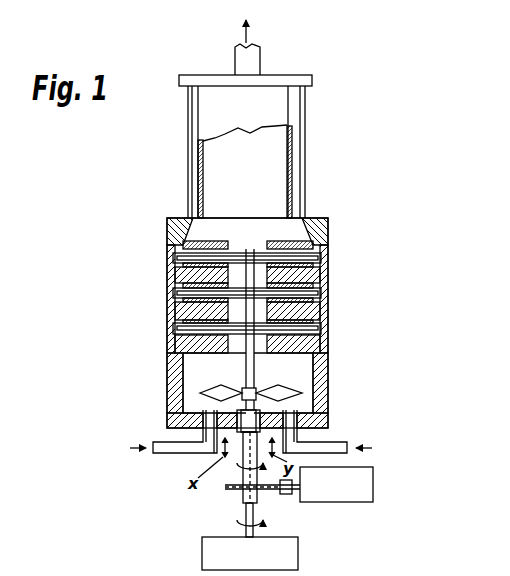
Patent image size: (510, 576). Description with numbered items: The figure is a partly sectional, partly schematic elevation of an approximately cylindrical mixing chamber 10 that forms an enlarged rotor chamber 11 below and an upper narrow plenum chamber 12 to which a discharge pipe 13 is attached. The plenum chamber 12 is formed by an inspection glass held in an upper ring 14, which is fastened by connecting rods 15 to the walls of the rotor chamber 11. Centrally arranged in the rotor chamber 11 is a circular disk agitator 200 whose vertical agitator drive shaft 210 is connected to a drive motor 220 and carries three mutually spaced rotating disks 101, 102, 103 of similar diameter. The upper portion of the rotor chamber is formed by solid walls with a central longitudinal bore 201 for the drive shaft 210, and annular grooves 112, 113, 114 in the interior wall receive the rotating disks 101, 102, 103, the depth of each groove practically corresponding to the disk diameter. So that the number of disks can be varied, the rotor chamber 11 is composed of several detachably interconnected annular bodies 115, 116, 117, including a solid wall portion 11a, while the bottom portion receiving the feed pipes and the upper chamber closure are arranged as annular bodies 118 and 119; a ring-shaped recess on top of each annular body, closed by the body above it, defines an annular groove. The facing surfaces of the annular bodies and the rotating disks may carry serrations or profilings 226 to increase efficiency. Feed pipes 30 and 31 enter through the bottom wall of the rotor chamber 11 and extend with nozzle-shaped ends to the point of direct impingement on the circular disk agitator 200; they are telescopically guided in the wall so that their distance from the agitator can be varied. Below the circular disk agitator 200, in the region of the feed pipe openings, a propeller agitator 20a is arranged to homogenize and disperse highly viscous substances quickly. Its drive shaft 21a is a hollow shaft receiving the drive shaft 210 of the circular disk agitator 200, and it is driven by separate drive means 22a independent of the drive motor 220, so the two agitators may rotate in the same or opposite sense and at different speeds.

The mixing chamber 10 is at (340, 223).
The rotor chamber 11 is at (329, 362).
The housing block 11a is at (329, 275).
The plenum chamber 12 is at (230, 112).
The discharge pipe 13 is at (252, 58).
The upper ring 14 is at (296, 80).
The support rods 15 is at (188, 170).
The propeller agitator 20a is at (302, 398).
The drive shaft of the propeller agitator 21a is at (243, 500).
The drive means for the propeller agitator 22a is at (375, 500).
The feed pipe 30 is at (187, 450).
The feed pipe 31 is at (337, 443).
The rotating disk 101 is at (176, 332).
The rotating disk 102 is at (176, 296).
The rotating disk 103 is at (176, 259).
The annular groove 112 is at (329, 326).
The annular groove 113 is at (329, 292).
The annular groove 114 is at (329, 258).
The annular body 115 is at (176, 345).
The annular body 116 is at (176, 318).
The annular body 117 is at (176, 279).
The annular body 118 is at (170, 418).
The annular body 119 is at (180, 227).
The circular disk agitator 200 is at (246, 373).
The central longitudinal bore 201 is at (257, 353).
The agitator drive shaft 210 is at (245, 532).
The drive motor 220 is at (203, 558).
The serrations or profilings 226 is at (330, 242).